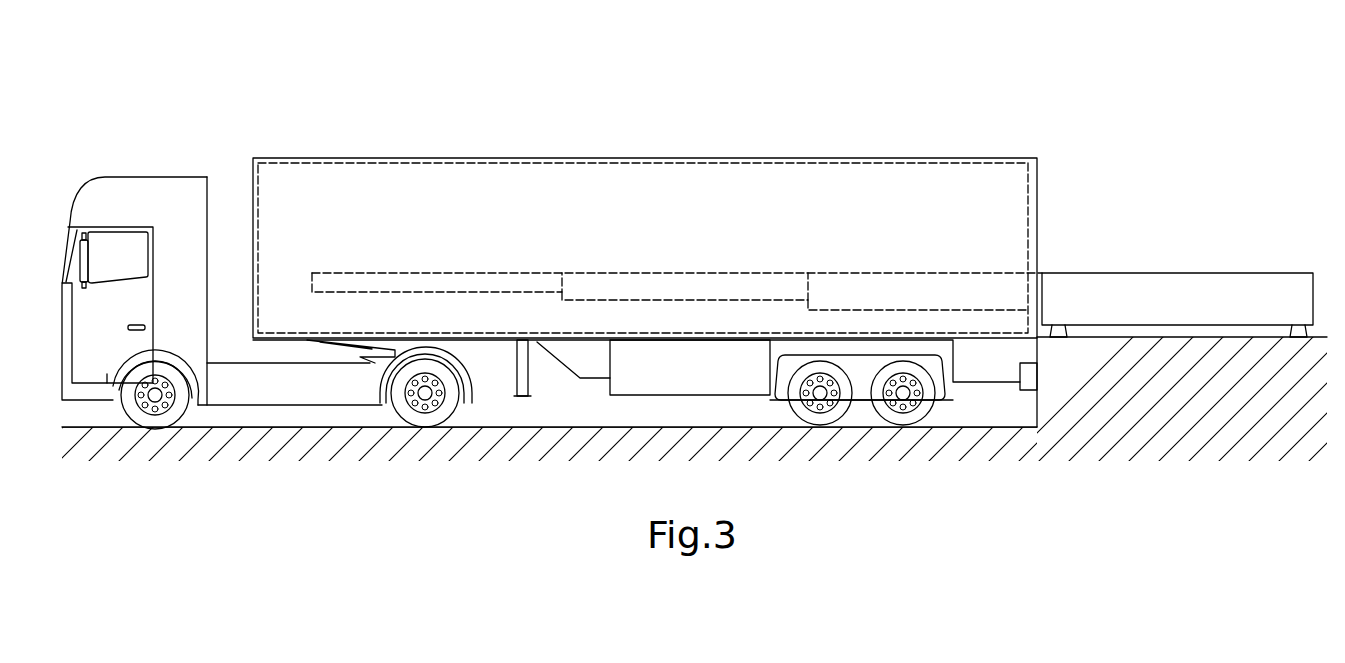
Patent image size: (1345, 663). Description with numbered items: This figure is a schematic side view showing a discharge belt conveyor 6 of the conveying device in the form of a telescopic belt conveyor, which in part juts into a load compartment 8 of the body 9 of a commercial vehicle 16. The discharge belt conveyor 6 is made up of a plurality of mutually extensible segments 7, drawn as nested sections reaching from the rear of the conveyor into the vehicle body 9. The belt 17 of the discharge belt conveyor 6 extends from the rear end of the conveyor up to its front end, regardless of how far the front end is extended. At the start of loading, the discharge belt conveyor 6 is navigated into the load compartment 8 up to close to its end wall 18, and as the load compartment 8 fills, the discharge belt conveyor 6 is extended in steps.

The commercial vehicle 16 is at (215, 77).
The end wall 18 is at (252, 178).
The body 9 is at (768, 158).
The load compartment 8 is at (671, 199).
The belt 17 is at (778, 268).
The mutually extensible segments 7 is at (432, 280).
The discharge belt conveyor 6 is at (1178, 285).